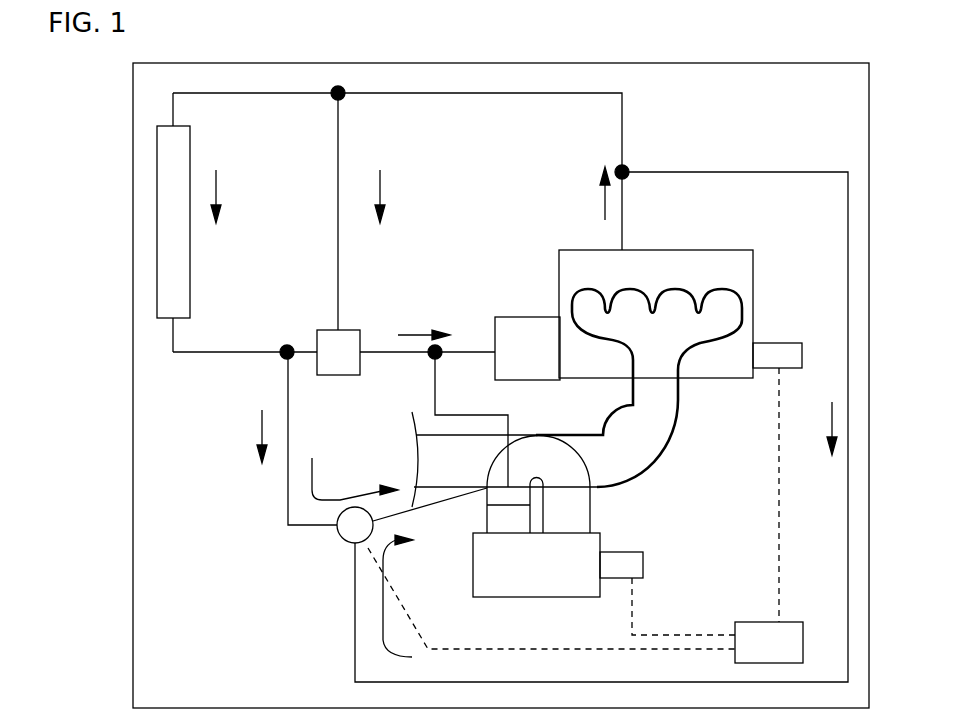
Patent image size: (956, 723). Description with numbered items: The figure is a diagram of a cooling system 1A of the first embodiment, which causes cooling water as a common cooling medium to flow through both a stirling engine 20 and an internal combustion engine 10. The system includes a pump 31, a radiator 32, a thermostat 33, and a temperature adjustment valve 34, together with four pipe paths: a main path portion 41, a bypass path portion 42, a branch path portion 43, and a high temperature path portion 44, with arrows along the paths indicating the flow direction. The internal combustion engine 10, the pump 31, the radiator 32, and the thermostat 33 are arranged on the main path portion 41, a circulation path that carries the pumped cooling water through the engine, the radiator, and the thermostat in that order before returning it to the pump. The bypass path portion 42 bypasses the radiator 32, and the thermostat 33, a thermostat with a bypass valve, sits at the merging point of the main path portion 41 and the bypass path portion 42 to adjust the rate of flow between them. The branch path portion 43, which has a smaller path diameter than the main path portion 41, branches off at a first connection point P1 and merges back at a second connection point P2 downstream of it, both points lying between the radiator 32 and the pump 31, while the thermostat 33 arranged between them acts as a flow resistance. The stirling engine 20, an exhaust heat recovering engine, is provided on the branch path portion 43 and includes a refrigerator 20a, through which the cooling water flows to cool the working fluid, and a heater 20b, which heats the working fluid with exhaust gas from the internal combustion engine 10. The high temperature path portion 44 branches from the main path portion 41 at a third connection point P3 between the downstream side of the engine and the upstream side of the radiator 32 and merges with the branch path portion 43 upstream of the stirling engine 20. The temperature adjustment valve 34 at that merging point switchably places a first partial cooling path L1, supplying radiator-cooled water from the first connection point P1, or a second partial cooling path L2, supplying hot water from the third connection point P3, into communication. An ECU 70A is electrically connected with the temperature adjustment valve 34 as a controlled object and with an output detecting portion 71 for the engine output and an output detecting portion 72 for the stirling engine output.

The cooling system 1A is at (130, 133).
The internal combustion engine 10 is at (703, 250).
The stirling engine 20 is at (472, 566).
The refrigerator 20a is at (507, 497).
The heater 20b is at (575, 462).
The pump 31 is at (527, 317).
The radiator 32 is at (190, 270).
The thermostat 33 is at (325, 329).
The temperature adjustment valve 34 is at (343, 543).
The main path portion 41 is at (622, 130).
The bypass path portion 42 is at (338, 130).
The branch path portion 43 is at (287, 477).
The high temperature path portion 44 is at (355, 650).
The output detecting portion 71 is at (780, 343).
The output detecting portion 72 is at (645, 563).
The ECU 70A is at (752, 622).
The first connection point P1 is at (283, 358).
The second connection point P2 is at (432, 359).
The third connection point P3 is at (627, 178).
The first partial cooling path L1 is at (312, 483).
The second partial cooling path L2 is at (382, 614).